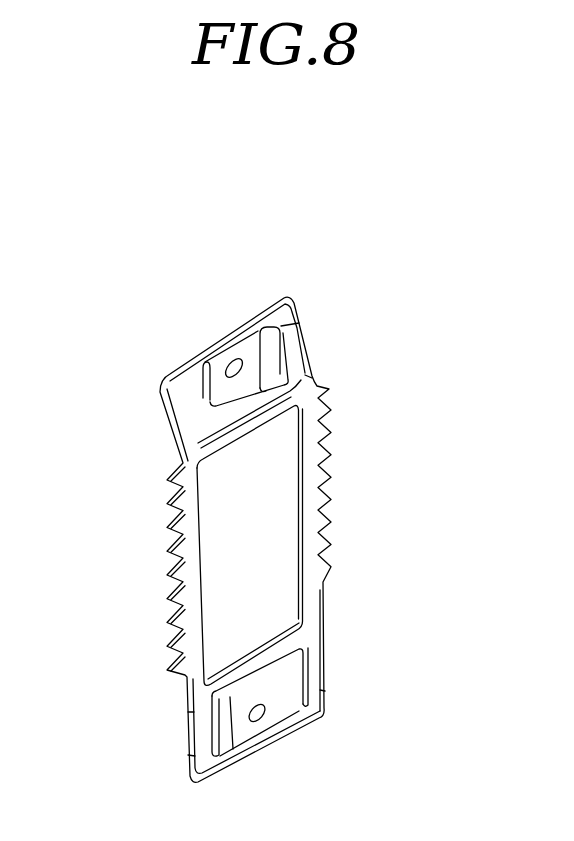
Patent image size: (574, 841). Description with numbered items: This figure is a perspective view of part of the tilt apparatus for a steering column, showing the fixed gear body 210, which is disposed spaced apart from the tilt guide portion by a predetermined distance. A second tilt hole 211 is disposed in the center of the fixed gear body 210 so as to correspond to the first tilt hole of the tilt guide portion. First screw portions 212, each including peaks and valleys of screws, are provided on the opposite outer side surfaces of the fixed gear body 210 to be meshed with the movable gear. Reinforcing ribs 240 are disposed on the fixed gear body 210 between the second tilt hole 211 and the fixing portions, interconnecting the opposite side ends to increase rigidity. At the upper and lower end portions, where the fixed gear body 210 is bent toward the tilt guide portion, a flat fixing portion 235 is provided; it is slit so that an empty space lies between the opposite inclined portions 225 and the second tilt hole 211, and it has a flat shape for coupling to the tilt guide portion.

The fixed gear body 210 is at (178, 625).
The second tilt hole 211 is at (238, 520).
The first screw portion 212 is at (168, 513).
The inclined portion 225 is at (180, 428).
The flat fixing portion 235 is at (208, 377).
The reinforcing rib 240 is at (262, 419).